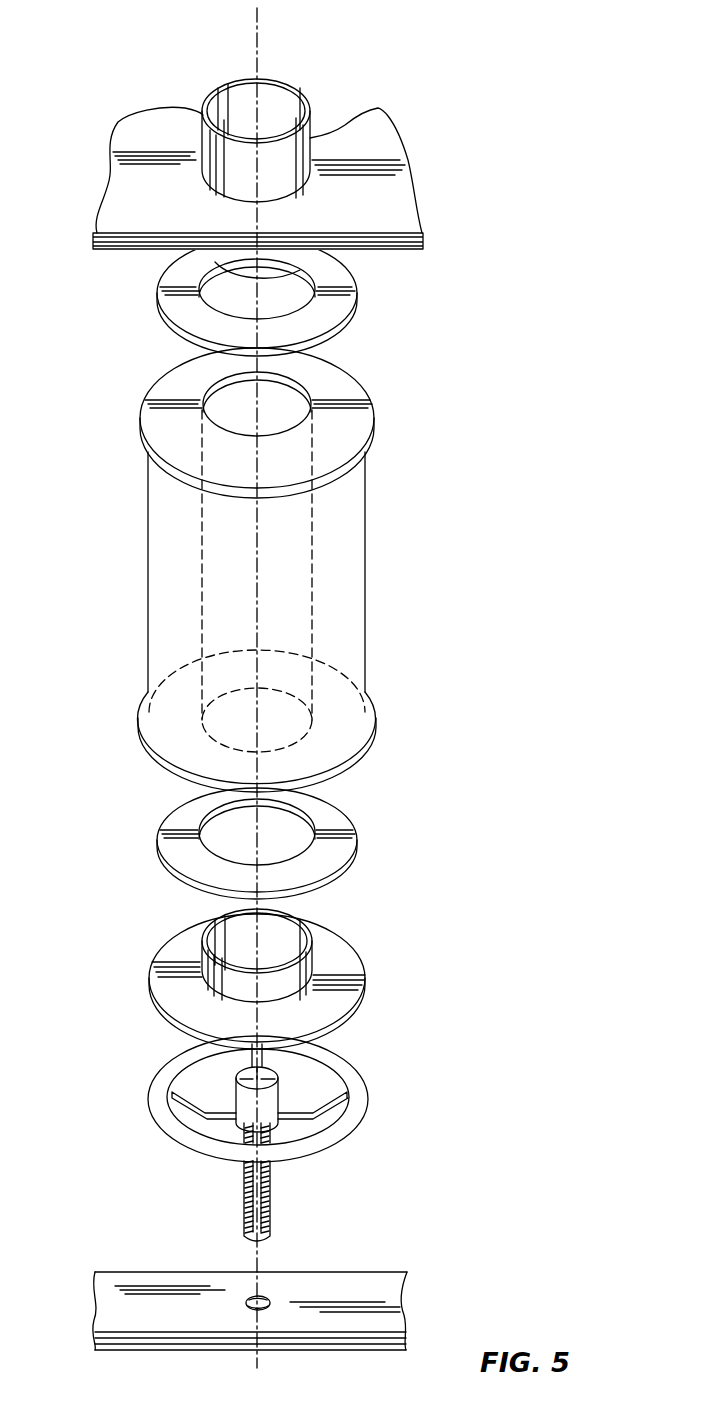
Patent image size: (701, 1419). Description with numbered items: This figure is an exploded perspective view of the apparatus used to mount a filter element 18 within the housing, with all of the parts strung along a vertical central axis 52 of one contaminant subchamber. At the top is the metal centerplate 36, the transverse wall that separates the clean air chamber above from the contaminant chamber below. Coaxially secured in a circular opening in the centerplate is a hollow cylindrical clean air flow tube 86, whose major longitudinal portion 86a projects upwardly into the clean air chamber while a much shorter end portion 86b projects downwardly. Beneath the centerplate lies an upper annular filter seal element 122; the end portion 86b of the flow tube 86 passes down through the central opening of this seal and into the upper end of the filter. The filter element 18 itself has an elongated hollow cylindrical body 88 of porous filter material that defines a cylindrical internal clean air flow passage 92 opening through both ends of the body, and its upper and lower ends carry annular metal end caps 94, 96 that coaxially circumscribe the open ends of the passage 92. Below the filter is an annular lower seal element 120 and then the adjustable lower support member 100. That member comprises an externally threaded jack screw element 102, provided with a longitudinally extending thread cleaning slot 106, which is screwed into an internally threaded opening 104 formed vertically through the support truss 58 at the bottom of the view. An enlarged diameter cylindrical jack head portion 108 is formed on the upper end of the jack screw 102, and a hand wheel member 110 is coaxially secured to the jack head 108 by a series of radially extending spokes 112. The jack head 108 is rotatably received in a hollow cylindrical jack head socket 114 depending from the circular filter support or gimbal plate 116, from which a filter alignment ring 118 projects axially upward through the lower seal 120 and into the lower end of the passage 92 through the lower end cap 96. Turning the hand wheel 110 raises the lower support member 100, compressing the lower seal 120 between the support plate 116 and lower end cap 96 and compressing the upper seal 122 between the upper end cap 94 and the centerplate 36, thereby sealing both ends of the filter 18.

The vertical central axis 52 is at (258, 46).
The centerplate 36 is at (120, 140).
The clean air flow tube 86 is at (276, 179).
The major longitudinal portion of flow tube 86a is at (360, 110).
The end portion of flow tube 86b is at (290, 272).
The upper annular filter seal element 122 is at (175, 295).
The filter element 18 is at (285, 570).
The upper annular metal end cap 94 is at (363, 448).
The hollow cylindrical filter body 88 is at (150, 598).
The internal clean air flow passage 92 is at (206, 556).
The lower annular metal end cap 96 is at (350, 778).
The lower annular seal element 120 is at (176, 816).
The filter support plate (gimbal plate) 116 is at (232, 979).
The filter alignment ring 118 is at (205, 953).
The adjustable lower support member 100 is at (247, 1127).
The hand wheel member 110 is at (152, 1118).
The spokes 112 is at (167, 1090).
The jack head socket 114 is at (265, 1058).
The jack head portion 108 is at (280, 1098).
The jack screw element 102 is at (258, 1182).
The thread cleaning slot 106 is at (243, 1200).
The support truss 58 is at (238, 1295).
The internally threaded opening 104 is at (262, 1296).